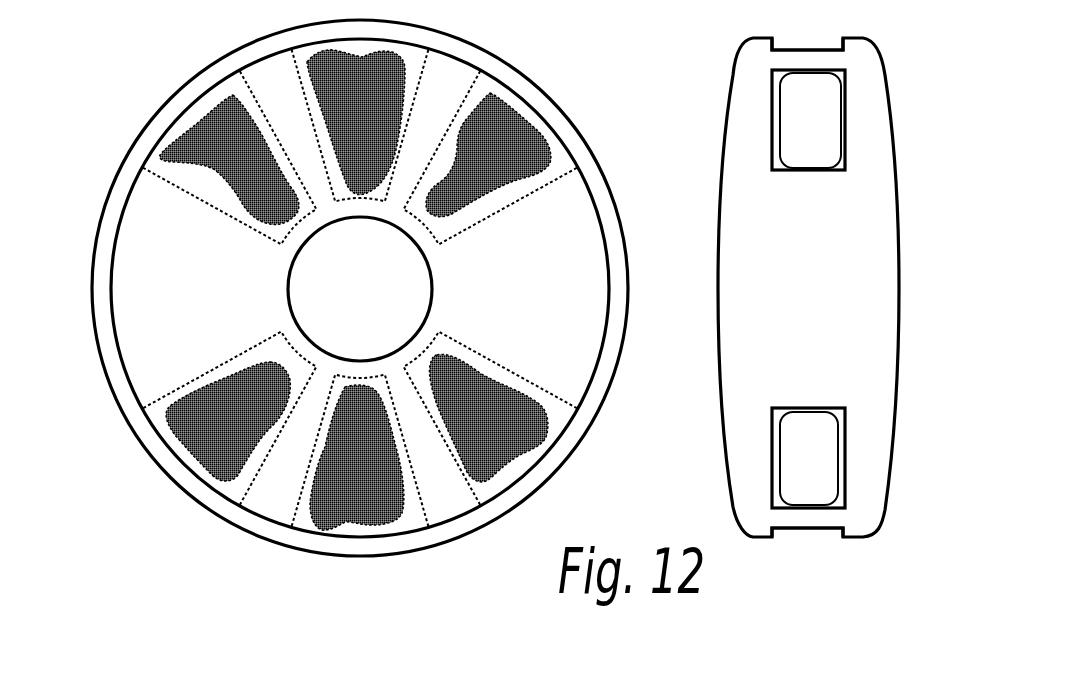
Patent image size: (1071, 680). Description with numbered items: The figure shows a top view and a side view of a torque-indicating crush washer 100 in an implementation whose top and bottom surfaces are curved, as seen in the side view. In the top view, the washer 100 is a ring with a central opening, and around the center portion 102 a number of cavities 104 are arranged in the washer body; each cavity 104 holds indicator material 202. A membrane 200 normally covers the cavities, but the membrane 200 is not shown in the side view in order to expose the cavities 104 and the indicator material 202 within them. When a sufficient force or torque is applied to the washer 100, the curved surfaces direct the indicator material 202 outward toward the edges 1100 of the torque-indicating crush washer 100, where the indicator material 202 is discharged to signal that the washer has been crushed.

The torque-indicating crush washer 100 is at (612, 84).
The center portion 102 is at (718, 272).
The cavity 104 is at (294, 93).
The membrane 200 is at (163, 473).
The indicator material 202 is at (500, 290).
The edges 1100 is at (876, 50).